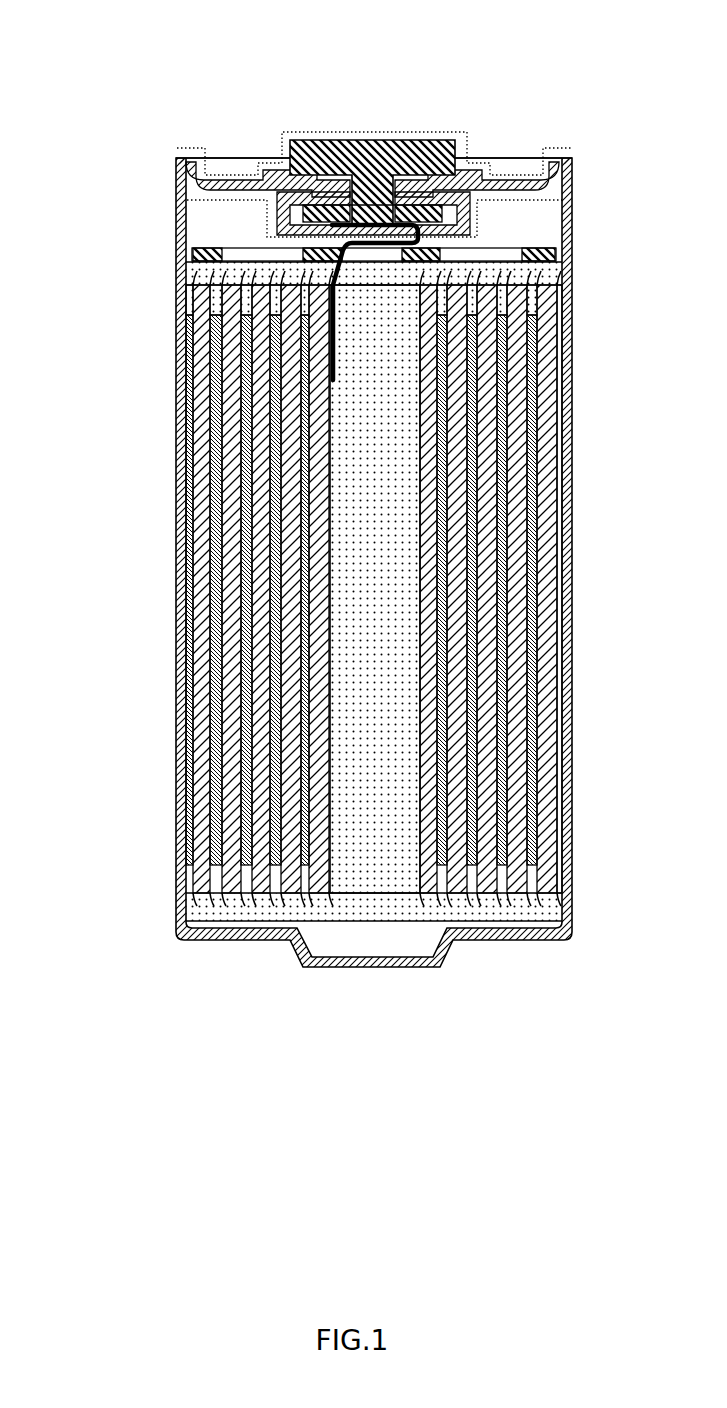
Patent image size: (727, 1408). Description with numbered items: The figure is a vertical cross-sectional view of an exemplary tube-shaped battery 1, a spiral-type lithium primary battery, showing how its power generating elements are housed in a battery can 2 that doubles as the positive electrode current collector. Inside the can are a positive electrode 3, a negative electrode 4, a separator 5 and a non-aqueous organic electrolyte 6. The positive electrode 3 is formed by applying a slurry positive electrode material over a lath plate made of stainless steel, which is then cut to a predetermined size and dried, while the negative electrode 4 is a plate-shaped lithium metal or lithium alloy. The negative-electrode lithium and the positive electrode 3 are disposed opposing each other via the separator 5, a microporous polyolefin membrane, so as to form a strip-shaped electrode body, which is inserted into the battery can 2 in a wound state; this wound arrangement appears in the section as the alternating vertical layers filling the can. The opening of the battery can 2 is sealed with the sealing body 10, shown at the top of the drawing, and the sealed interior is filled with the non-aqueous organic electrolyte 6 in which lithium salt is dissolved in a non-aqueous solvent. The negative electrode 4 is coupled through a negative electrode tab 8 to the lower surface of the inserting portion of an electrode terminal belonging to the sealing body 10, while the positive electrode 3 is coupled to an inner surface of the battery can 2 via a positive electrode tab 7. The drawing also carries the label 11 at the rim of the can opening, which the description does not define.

The tube-shaped battery 1 is at (545, 73).
The battery can 2 is at (568, 253).
The positive electrode 3 is at (185, 395).
The negative electrode 4 is at (196, 497).
The separator 5 is at (196, 280).
The non-aqueous organic electrolyte 6 is at (388, 540).
The positive electrode tab 7 is at (560, 290).
The negative electrode tab 8 is at (343, 250).
The sealing body 10 is at (296, 132).
The case opening edge 11 is at (181, 157).